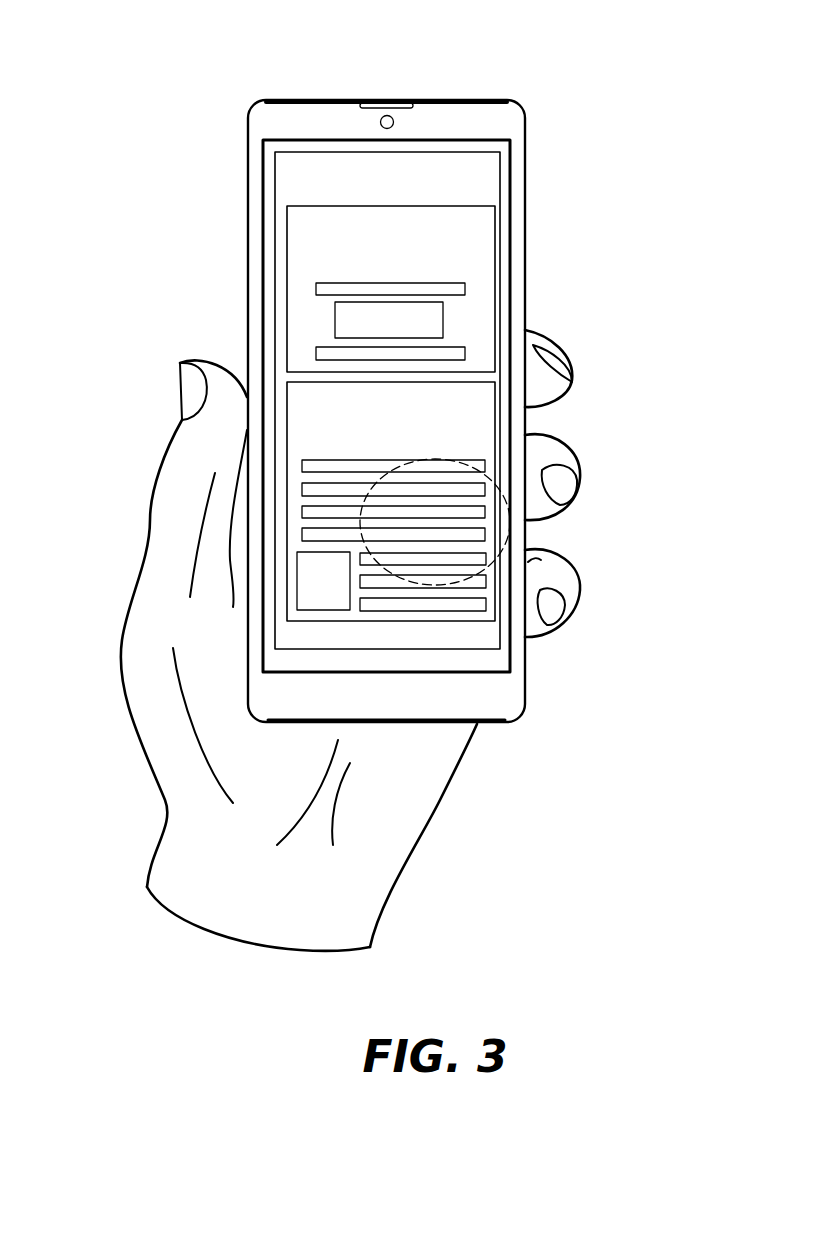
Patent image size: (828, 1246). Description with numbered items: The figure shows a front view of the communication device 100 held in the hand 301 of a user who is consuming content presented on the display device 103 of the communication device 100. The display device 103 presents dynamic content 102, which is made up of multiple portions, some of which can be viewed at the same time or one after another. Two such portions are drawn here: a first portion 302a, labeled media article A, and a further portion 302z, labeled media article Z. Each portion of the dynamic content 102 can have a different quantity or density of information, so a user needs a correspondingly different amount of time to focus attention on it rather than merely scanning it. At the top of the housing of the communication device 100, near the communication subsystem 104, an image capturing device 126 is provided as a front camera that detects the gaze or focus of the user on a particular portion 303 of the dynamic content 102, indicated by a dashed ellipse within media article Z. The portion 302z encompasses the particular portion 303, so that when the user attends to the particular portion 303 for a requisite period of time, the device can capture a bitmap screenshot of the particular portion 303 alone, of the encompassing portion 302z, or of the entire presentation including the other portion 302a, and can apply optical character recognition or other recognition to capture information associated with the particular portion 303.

The communication device 100 is at (434, 369).
The dynamic content 102 is at (500, 193).
The display device 103 is at (465, 140).
The communication subsystem 104 is at (304, 95).
The image capturing device 126 is at (395, 122).
The hand 301 is at (133, 571).
The portion of dynamic content (media article A) 302a is at (475, 258).
The portion of dynamic content (media article Z) 302z is at (475, 420).
The particular portion 303 is at (506, 475).